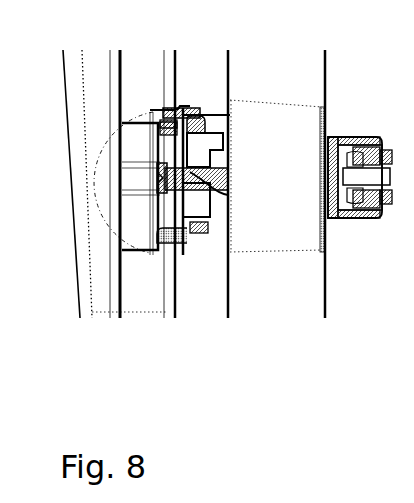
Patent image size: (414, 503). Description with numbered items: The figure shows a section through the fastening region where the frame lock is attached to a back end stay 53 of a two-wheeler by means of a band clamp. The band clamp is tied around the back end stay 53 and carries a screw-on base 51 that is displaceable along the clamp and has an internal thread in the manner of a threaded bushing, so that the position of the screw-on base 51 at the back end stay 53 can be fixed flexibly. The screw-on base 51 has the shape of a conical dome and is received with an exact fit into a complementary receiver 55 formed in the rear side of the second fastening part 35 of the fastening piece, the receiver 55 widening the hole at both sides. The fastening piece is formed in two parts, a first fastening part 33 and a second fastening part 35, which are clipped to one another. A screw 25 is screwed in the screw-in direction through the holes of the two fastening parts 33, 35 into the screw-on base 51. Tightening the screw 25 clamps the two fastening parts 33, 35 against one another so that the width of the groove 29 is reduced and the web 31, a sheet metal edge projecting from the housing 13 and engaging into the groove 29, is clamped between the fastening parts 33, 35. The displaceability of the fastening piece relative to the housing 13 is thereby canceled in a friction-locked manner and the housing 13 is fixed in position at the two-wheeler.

The housing 13 is at (82, 260).
The screw 25 is at (224, 183).
The groove 29 is at (208, 132).
The web 31 is at (192, 112).
The first fastening part 33 is at (178, 112).
The second fastening part 35 is at (205, 120).
The screw-on base 51 is at (200, 172).
The back end stay 53 is at (327, 66).
The receiver 55 is at (212, 196).